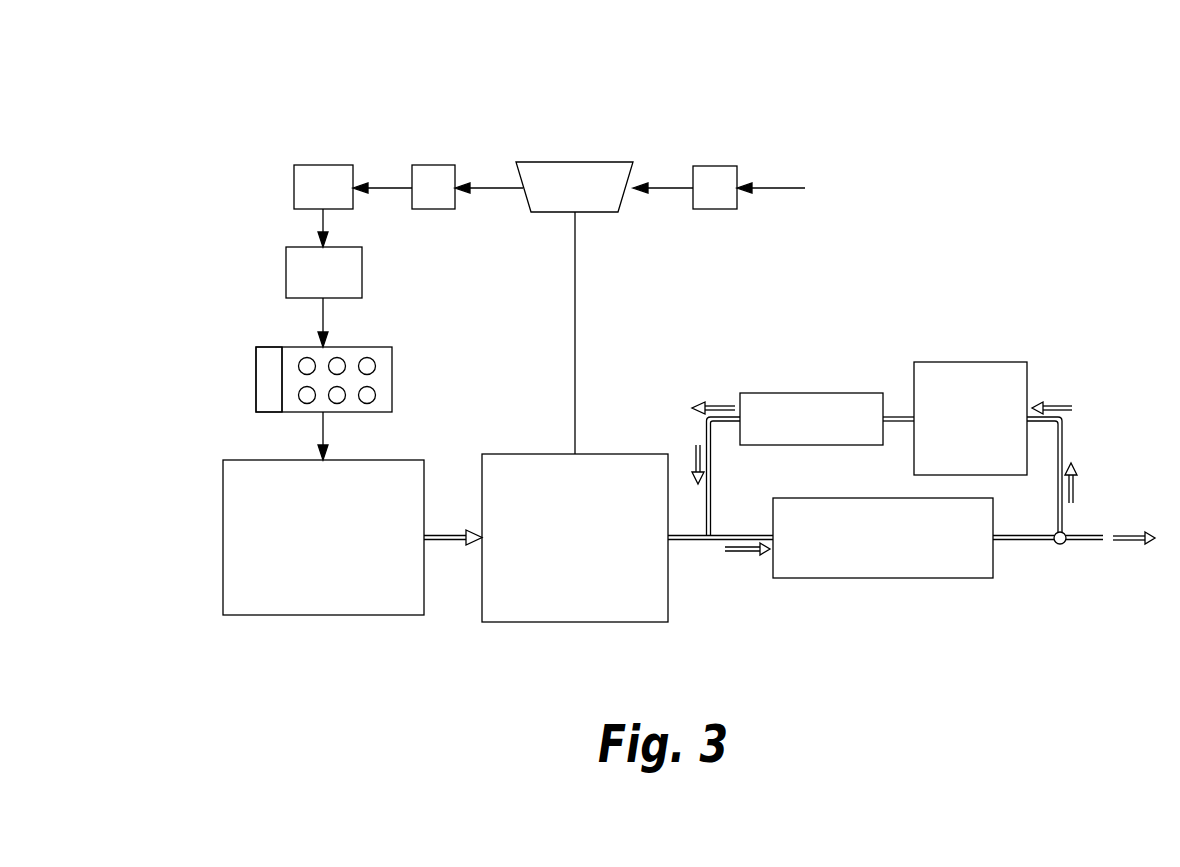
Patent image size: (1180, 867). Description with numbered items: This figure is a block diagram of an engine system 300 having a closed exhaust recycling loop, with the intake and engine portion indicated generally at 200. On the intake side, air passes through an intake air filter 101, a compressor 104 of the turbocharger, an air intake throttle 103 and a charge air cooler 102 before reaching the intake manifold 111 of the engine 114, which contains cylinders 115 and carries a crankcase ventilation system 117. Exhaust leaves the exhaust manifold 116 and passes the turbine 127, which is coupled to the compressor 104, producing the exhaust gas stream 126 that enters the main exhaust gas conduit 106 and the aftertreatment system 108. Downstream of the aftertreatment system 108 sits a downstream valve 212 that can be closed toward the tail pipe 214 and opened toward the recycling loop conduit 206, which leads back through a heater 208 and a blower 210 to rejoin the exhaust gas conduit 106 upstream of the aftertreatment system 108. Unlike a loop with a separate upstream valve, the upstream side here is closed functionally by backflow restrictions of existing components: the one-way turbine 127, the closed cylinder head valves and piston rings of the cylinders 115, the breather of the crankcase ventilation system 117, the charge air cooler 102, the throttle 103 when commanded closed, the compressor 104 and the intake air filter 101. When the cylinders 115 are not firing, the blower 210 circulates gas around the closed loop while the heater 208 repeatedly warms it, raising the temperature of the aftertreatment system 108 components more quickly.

The fuel cell system 200 is at (346, 120).
The engine system 300 is at (1010, 255).
The intake air filter 101 is at (705, 209).
The charge air cooler 102 is at (294, 181).
The air intake throttle 103 is at (428, 209).
The compressor 104 is at (554, 162).
The intake manifold 111 is at (286, 265).
The engine 114 is at (317, 376).
The cylinders 115 is at (305, 402).
The exhaust manifold 116 is at (325, 615).
The crankcase ventilation system 117 is at (256, 370).
The exhaust gas stream 126 is at (452, 546).
The turbine 127 is at (510, 454).
The main exhaust gas conduit 106 is at (766, 535).
The aftertreatment system 108 is at (810, 498).
The recycling loop conduit 206 is at (706, 430).
The heater 208 is at (845, 393).
The blower 210 is at (1027, 377).
The downstream valve 212 is at (1062, 546).
The tail pipe 214 is at (1105, 535).